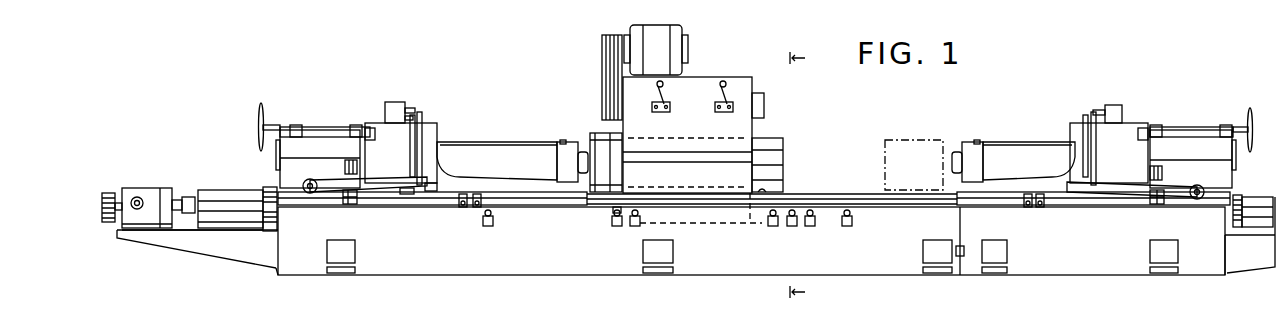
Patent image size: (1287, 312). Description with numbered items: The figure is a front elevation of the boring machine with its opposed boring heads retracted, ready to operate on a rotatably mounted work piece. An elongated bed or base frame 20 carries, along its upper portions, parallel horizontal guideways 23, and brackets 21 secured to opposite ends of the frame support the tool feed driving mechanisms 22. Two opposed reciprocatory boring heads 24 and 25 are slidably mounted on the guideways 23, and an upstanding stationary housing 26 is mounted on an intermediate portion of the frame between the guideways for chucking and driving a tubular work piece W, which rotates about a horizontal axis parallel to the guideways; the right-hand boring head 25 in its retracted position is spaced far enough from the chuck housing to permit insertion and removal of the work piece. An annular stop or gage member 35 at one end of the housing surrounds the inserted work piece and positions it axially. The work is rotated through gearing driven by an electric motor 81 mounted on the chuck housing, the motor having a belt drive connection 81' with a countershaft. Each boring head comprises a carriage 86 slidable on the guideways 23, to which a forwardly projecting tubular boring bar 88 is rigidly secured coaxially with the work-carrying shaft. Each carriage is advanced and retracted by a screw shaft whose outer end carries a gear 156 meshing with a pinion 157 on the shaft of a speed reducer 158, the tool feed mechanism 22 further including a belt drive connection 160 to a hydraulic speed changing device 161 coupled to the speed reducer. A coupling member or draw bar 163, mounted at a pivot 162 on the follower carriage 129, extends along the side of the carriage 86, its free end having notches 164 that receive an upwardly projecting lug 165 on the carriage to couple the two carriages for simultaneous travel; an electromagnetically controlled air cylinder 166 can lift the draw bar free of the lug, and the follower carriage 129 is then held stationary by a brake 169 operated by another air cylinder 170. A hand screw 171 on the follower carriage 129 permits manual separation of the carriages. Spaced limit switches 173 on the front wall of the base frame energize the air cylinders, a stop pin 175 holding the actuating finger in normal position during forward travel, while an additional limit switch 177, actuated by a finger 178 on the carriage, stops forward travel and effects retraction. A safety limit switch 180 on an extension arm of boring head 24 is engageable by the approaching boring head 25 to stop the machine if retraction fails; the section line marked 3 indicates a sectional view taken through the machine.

The elongated bed or base frame 20 is at (556, 276).
The bracket 21 is at (210, 247).
The tool feed driving mechanism 22 is at (212, 162).
The horizontal guideway 23 is at (841, 193).
The boring head 24 is at (372, 113).
The boring head 25 is at (1168, 101).
The stationary housing 26 is at (741, 78).
The annular stop or gage member 35 is at (593, 133).
The electric motor 81 is at (673, 50).
The belt drive connection 81' is at (583, 77).
The carriage 86 is at (428, 120).
The tubular boring bar 88 is at (501, 142).
The follower carriage 129 is at (304, 142).
The gear 156 is at (278, 262).
The pinion 157 is at (266, 190).
The speed reducer 158 is at (221, 190).
The belt drive connection 160 is at (110, 190).
The hydraulic speed changing device 161 is at (150, 190).
The pivot roller 162 is at (312, 194).
The coupling member or draw bar 163 is at (375, 183).
The notch 164 is at (432, 192).
The lug 165 is at (405, 195).
The air cylinder 166 is at (396, 100).
The brake 169 is at (348, 204).
The air cylinder 170 is at (345, 168).
The hand screw 171 is at (258, 126).
The limit switch 173 is at (491, 226).
The stop pin 175 is at (463, 208).
The limit switch 177 is at (635, 226).
The finger 178 is at (477, 208).
The safety limit switch 180 is at (616, 220).
The section line 3- 3 is at (792, 171).
The work piece W is at (773, 142).